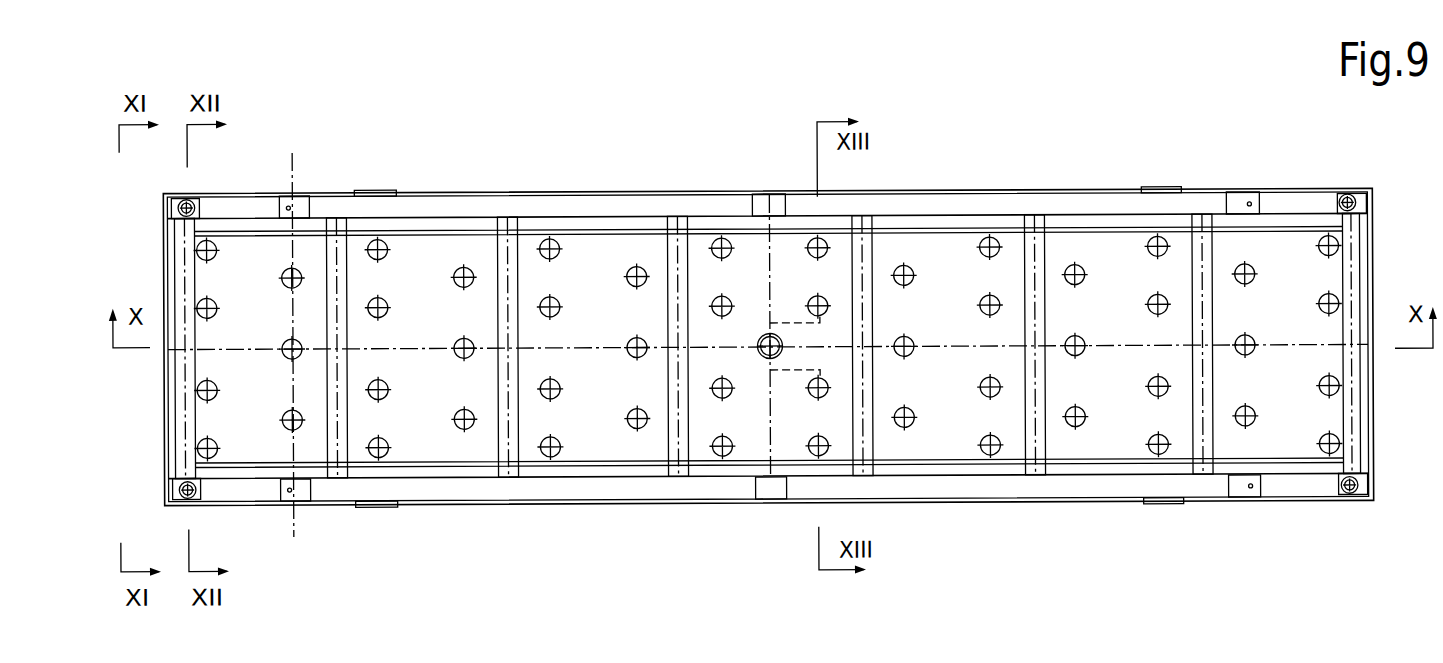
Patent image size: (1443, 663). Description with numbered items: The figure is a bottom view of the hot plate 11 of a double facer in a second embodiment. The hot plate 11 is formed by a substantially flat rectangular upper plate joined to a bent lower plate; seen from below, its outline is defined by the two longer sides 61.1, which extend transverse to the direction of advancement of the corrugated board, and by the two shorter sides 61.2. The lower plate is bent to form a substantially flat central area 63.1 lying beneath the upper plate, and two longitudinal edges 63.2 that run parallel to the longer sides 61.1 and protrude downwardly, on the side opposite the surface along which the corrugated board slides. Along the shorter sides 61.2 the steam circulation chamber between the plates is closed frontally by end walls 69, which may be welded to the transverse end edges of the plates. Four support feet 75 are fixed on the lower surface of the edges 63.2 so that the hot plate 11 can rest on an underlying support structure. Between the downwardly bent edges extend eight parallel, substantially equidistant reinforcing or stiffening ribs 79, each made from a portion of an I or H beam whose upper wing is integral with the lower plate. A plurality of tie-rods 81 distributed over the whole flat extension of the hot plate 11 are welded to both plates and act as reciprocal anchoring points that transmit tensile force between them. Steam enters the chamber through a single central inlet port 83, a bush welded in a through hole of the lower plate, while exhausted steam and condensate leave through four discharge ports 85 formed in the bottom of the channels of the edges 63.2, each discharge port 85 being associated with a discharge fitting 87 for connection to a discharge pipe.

The hot plate 11 is at (450, 523).
The longer sides 61.1 is at (348, 192).
The shorter sides 61.2 is at (164, 251).
The central area 63.1 is at (1128, 322).
The longitudinal edges 63.2 is at (1083, 203).
The end walls 69 is at (171, 423).
The support feet 75 is at (306, 204).
The reinforcing or stiffening ribs 79 is at (508, 288).
The tie-rods 81 is at (458, 338).
The inlet port 83 is at (765, 348).
The discharge ports 85 is at (191, 198).
The discharge fitting 87 is at (200, 206).